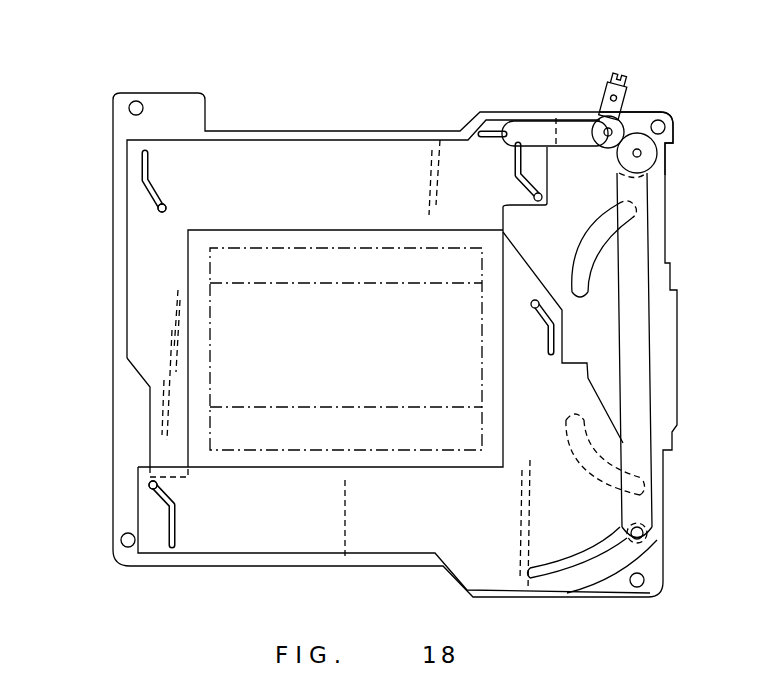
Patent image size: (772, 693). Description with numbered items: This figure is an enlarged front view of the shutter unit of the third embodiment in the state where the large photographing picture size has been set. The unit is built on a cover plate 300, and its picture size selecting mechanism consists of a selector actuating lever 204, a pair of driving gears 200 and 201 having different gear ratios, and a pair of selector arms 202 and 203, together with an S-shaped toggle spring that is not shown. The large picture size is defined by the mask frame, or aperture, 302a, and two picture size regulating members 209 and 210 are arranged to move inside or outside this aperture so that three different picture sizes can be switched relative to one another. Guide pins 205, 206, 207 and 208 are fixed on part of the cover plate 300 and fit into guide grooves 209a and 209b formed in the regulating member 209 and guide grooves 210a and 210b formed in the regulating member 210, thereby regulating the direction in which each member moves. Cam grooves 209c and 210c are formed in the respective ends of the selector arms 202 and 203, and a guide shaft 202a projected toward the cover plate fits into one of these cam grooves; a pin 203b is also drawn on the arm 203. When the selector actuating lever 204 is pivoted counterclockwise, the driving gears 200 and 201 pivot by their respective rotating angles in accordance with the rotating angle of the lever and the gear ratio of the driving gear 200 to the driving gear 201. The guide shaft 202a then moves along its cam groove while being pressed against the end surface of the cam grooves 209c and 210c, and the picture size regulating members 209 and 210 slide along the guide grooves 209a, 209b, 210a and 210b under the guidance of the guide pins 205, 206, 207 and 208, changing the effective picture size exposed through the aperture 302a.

The driving gear 200 is at (649, 112).
The driving gear 201 is at (637, 132).
The selector arm 202 is at (571, 124).
The guide shaft 202a is at (514, 148).
The selector arm 203 is at (643, 231).
The lever pin 203b is at (660, 532).
The selector actuating lever 204 is at (605, 80).
The guide pin 205 is at (563, 313).
The guide pin 206 is at (148, 486).
The guide pin 207 is at (158, 207).
The guide pin 208 is at (536, 196).
The picture size regulating member 209 is at (270, 530).
The guide groove 209a is at (178, 540).
The guide groove 209b is at (554, 336).
The cam groove 209c is at (562, 574).
The picture size regulating member 210 is at (250, 170).
The guide groove 210a is at (142, 170).
The guide groove 210b is at (514, 162).
The cam groove 210c is at (490, 128).
The cover plate 300 is at (655, 591).
The mask frame (aperture) 302a is at (297, 446).